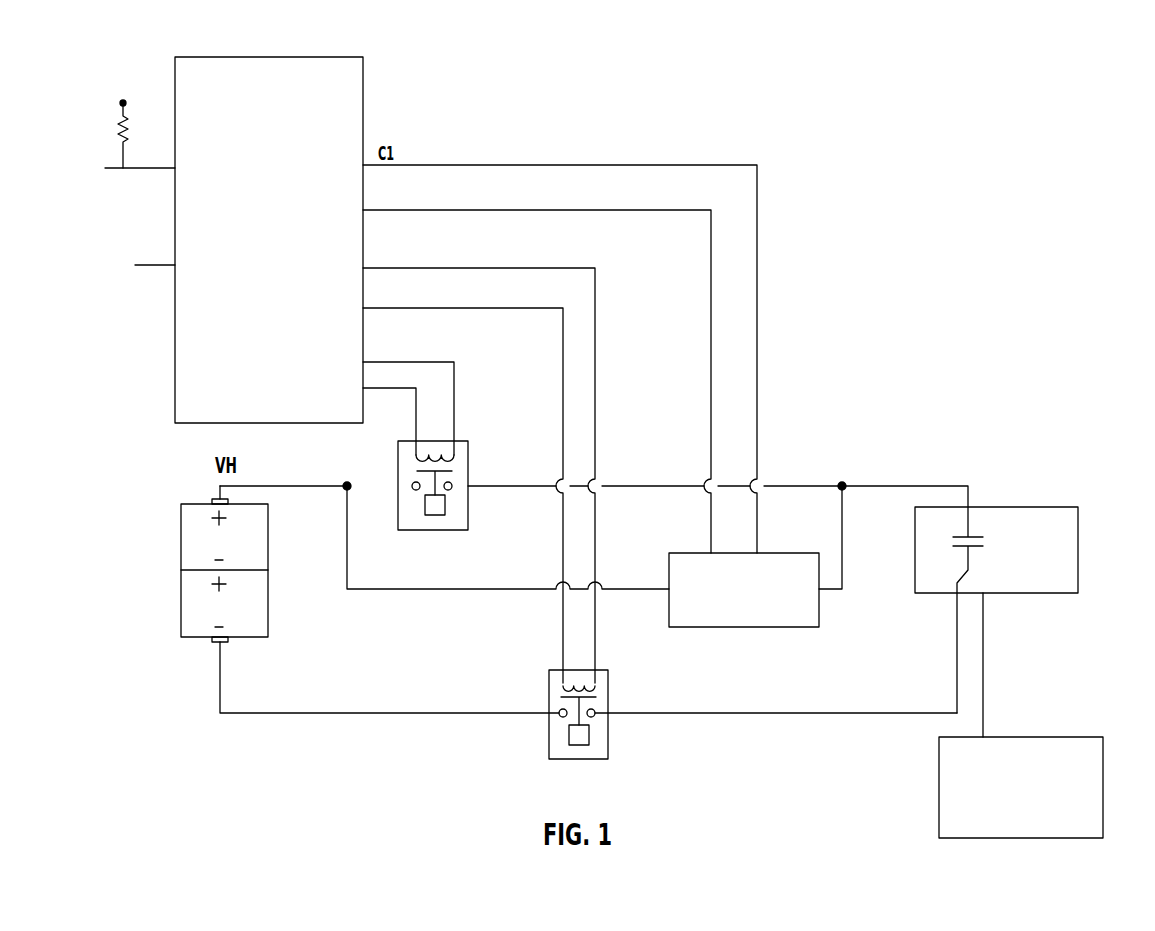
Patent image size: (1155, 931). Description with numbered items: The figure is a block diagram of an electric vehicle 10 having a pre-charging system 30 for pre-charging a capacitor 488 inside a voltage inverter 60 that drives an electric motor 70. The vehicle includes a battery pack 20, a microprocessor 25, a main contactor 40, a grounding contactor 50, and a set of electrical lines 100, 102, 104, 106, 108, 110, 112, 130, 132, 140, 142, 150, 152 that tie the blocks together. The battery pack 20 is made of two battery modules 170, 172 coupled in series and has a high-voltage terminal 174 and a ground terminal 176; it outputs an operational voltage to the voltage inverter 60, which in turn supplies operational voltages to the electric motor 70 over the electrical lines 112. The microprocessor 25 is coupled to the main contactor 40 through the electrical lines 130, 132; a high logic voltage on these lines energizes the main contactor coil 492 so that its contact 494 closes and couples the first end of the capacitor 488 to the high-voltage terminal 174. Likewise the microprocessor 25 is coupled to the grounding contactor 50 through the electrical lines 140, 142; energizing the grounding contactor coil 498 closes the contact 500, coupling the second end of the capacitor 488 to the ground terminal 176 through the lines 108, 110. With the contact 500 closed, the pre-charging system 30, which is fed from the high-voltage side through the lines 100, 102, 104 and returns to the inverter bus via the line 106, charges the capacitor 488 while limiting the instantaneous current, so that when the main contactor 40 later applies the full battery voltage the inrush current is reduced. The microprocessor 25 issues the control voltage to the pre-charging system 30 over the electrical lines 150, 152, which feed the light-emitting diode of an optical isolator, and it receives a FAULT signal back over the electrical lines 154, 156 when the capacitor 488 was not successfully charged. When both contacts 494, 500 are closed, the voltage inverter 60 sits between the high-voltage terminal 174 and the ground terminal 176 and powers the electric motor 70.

The electric vehicle 10 is at (887, 112).
The microprocessor 25 is at (280, 57).
The electrical line 154 is at (147, 167).
The electrical line 156 is at (148, 265).
The electrical line 150 is at (432, 165).
The electrical line 152 is at (433, 210).
The electrical line 140 is at (413, 268).
The electrical line 142 is at (410, 308).
The electrical line 130 is at (404, 362).
The electrical line 132 is at (400, 388).
The main contactor 40 is at (468, 460).
The main contactor coil 492 is at (431, 455).
The contact 494 is at (452, 482).
The electrical line 100 is at (292, 486).
The battery pack 20 is at (268, 557).
The battery module 170 is at (181, 530).
The battery module 172 is at (181, 598).
The high-voltage terminal 174 is at (214, 499).
The ground terminal 176 is at (217, 642).
The electrical line 102 is at (629, 486).
The electrical line 104 is at (438, 589).
The electrical line 106 is at (842, 528).
The pre-charging system 30 is at (852, 613).
The voltage inverter 60 is at (1026, 510).
The capacitor 488 is at (966, 540).
The electrical lines 112 is at (983, 669).
The electric motor 70 is at (1064, 737).
The electrical line 108 is at (373, 713).
The electrical line 110 is at (748, 713).
The grounding contactor 50 is at (608, 690).
The grounding contactor coil 498 is at (589, 683).
The contact 500 is at (595, 710).